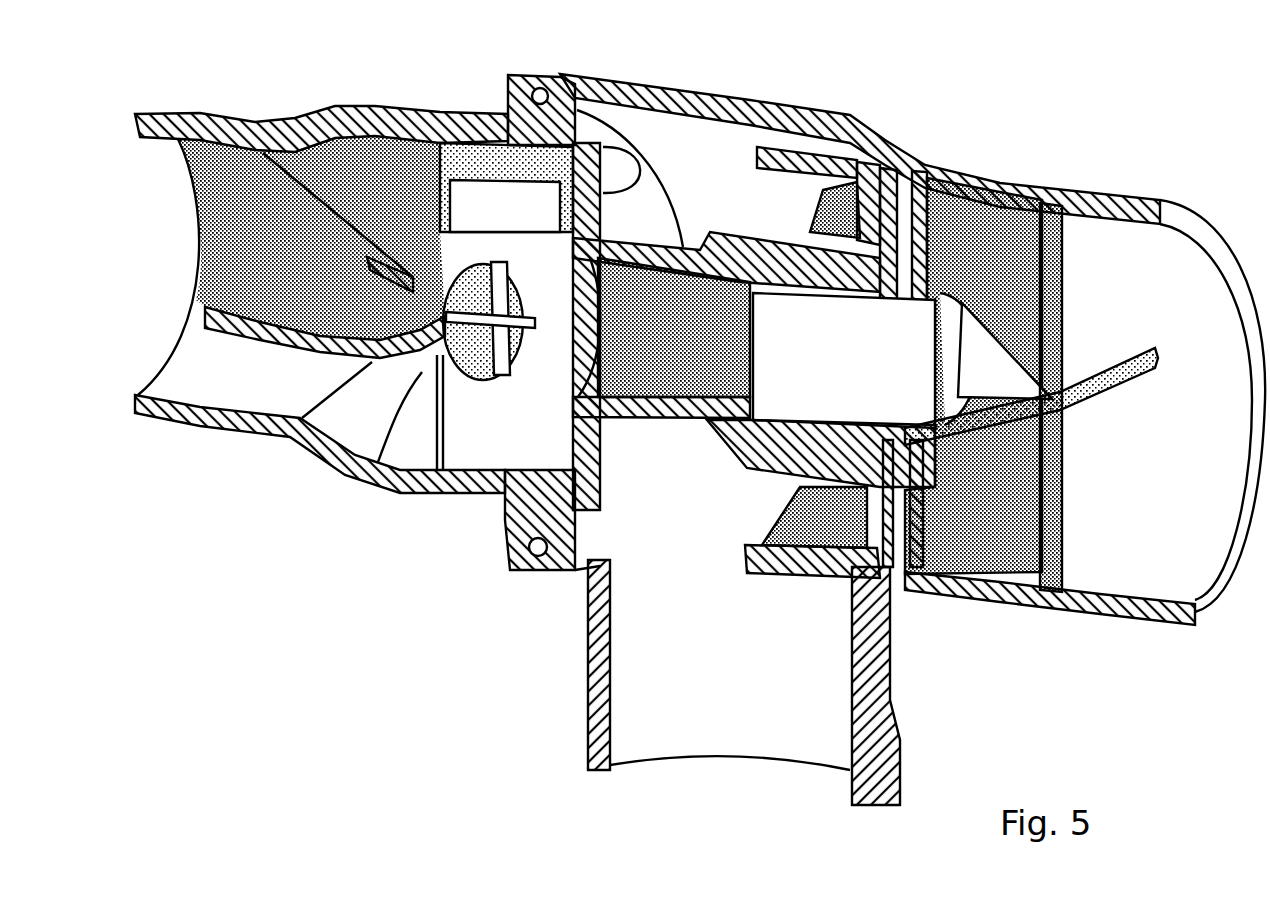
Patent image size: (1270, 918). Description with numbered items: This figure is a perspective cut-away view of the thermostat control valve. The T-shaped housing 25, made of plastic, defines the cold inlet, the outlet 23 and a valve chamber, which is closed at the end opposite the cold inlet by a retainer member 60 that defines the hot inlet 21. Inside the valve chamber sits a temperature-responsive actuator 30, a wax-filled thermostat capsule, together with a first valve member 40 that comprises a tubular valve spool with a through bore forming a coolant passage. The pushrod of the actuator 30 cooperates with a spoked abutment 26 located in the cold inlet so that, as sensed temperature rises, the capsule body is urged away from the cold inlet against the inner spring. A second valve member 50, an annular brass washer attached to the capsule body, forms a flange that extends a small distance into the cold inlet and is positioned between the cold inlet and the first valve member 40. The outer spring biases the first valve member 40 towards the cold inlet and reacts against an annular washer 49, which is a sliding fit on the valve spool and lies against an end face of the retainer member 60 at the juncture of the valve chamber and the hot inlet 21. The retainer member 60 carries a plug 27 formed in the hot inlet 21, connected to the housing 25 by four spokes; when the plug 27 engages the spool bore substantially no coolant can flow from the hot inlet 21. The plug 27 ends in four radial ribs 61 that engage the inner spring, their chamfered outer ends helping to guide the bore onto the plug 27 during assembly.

The hot inlet 21 is at (157, 141).
The outlet 23 is at (620, 760).
The housing 25 is at (987, 178).
The spoked abutment 26 is at (1072, 576).
The plug 27 is at (395, 440).
The temperature-responsive actuator 30 is at (878, 383).
The first valve member 40 is at (800, 488).
The annular washer 49 is at (657, 173).
The second valve member 50 is at (945, 572).
The retainer member 60 is at (345, 114).
The radial ribs 61 is at (518, 385).